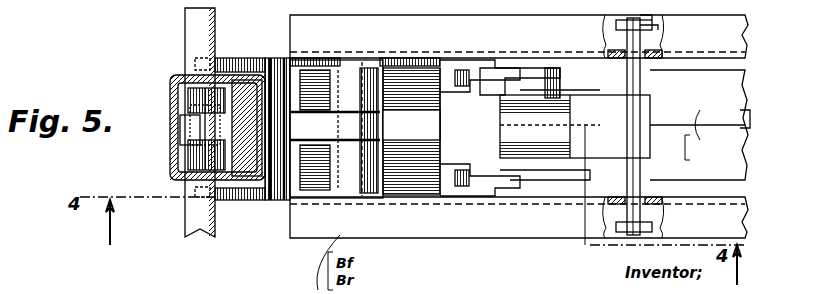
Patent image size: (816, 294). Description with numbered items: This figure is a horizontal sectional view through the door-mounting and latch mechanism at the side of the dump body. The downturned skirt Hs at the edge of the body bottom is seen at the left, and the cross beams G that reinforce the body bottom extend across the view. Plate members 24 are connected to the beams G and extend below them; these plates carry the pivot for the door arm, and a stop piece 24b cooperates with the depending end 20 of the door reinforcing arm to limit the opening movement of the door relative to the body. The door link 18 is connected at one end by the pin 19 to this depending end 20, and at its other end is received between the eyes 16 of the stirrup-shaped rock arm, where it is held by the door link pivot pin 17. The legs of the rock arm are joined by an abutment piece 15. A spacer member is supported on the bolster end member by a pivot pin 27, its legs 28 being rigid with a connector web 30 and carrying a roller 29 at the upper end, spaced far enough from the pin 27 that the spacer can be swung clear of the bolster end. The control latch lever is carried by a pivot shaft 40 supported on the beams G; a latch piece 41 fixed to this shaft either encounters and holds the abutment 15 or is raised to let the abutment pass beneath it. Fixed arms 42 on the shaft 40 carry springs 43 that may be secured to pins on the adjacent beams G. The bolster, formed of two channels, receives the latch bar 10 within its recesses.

The downturned skirt Hs is at (208, 22).
The cross beam G is at (490, 237).
The plate member 24 is at (238, 58).
The stop piece 24b is at (292, 57).
The pin 19 is at (212, 97).
The depending end 20 is at (190, 163).
The eye 16 is at (345, 70).
The door link pivot pin 17 is at (363, 64).
The door link 18 is at (336, 129).
The abutment piece 15 is at (411, 131).
The pivot pin 27 is at (415, 131).
The leg 28 is at (443, 60).
The roller 29 is at (508, 66).
The connector web 30 is at (546, 67).
The latch piece 41 is at (568, 170).
The pivot shaft 40 is at (641, 90).
The fixed arm 42 is at (620, 18).
The spring 43 is at (656, 36).
The latch bar 10 is at (742, 118).